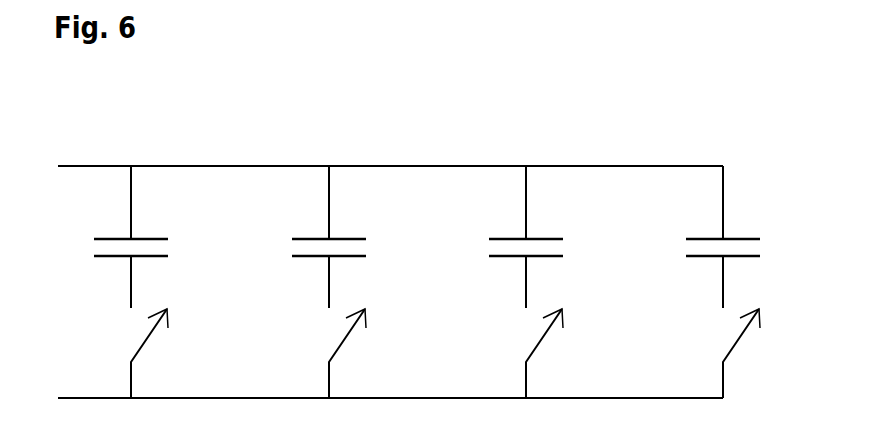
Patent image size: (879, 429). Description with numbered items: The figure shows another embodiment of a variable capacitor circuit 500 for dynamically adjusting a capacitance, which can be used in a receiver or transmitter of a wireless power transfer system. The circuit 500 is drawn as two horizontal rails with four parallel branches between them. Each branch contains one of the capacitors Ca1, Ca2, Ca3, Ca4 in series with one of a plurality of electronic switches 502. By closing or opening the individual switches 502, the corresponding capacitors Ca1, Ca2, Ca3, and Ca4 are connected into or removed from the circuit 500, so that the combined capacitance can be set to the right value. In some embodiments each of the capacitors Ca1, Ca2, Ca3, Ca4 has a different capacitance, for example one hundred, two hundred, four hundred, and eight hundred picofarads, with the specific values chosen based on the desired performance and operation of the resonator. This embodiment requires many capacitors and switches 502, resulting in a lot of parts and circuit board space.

The variable capacitor circuit 500 is at (442, 217).
The electronic switch 502 is at (156, 330).
The capacitor Ca1 is at (167, 226).
The capacitor Ca2 is at (365, 226).
The capacitor Ca3 is at (562, 226).
The capacitor Ca4 is at (759, 226).